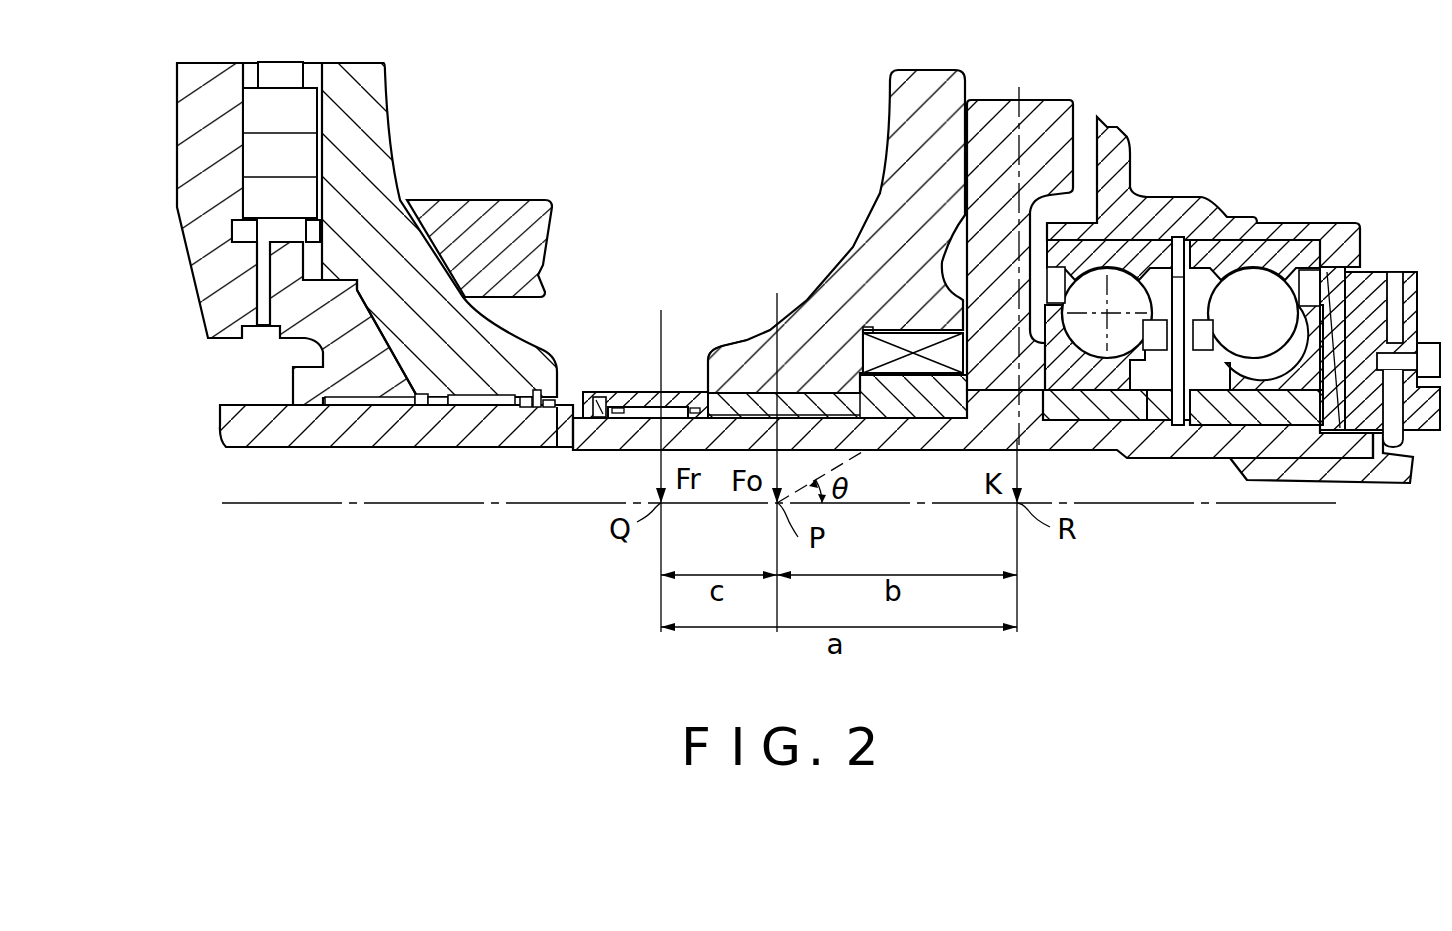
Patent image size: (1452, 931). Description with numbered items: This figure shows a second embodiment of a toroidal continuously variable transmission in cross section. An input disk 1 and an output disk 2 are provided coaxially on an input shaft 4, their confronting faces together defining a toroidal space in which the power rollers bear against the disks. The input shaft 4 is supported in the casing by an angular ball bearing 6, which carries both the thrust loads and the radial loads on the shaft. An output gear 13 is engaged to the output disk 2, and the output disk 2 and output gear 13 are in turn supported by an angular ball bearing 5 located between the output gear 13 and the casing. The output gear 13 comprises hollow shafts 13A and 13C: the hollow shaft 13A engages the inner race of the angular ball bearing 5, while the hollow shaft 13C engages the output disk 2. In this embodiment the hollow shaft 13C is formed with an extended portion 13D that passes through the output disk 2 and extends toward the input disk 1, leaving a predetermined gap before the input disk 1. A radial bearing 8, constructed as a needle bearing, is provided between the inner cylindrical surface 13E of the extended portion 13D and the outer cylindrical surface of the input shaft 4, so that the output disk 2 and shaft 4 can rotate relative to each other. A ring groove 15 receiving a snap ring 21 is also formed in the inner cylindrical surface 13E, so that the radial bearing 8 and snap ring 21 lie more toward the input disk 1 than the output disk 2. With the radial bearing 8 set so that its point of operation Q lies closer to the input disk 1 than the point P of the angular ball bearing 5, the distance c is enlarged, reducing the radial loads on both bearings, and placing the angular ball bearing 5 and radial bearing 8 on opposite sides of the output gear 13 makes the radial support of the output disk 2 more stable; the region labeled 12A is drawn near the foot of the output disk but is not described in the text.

The input disk 1 is at (382, 63).
The output disk 2 is at (890, 110).
The input shaft 4 is at (1377, 473).
The angular ball bearing 5 is at (1120, 277).
The angular ball bearing 6 is at (1262, 277).
The radial bearing 8 is at (647, 410).
The foot portion 12A is at (753, 390).
The output gear 13 is at (1062, 100).
The hollow shaft 13A is at (1140, 387).
The hollow shaft 13C is at (910, 373).
The extended portion 13D is at (693, 392).
The inner cylindrical surface 13E is at (580, 440).
The ring groove 15 is at (598, 406).
The snap ring 21 is at (597, 440).